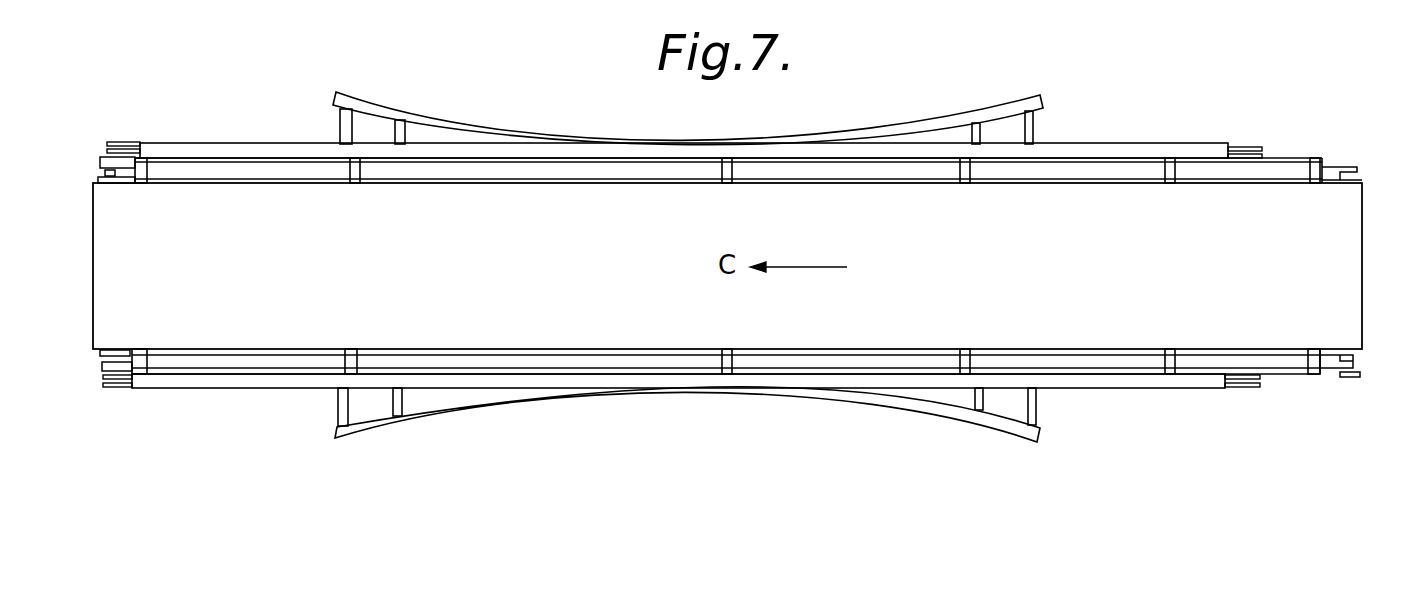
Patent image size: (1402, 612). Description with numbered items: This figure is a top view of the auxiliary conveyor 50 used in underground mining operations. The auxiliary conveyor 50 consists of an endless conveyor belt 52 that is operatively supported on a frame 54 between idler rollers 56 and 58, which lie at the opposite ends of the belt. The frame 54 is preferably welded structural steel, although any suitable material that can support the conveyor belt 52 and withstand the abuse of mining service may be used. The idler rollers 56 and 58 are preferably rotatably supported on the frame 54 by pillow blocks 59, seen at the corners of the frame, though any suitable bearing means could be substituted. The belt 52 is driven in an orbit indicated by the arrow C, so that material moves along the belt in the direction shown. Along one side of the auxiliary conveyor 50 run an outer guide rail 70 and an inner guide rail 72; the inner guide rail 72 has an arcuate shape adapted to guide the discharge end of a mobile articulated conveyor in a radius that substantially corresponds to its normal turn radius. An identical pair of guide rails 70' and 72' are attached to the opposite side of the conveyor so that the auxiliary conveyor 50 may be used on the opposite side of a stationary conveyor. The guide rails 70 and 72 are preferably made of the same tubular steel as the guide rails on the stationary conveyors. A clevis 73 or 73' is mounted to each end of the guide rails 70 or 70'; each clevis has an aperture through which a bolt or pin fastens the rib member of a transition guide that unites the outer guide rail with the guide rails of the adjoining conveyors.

The auxiliary conveyor 50 is at (664, 408).
The endless conveyor belt 52 is at (368, 272).
The frame 54 is at (1278, 365).
The idler roller 56 is at (1358, 180).
The idler roller 58 is at (97, 357).
The pillow block 59 is at (100, 160).
The outer guide rail 70 is at (684, 129).
The outer guide rail 70' is at (678, 415).
The inner guide rail 72 is at (687, 434).
The inner guide rail 72' is at (691, 90).
The clevis 73 is at (684, 117).
The clevis 73' is at (710, 415).